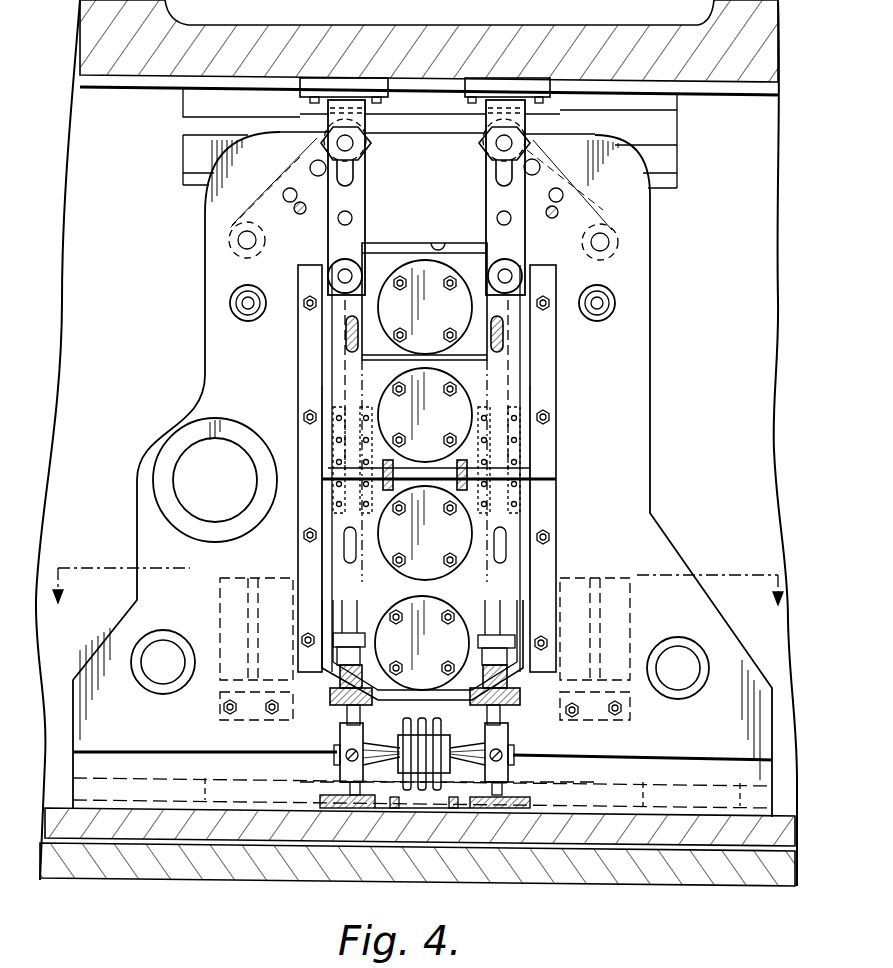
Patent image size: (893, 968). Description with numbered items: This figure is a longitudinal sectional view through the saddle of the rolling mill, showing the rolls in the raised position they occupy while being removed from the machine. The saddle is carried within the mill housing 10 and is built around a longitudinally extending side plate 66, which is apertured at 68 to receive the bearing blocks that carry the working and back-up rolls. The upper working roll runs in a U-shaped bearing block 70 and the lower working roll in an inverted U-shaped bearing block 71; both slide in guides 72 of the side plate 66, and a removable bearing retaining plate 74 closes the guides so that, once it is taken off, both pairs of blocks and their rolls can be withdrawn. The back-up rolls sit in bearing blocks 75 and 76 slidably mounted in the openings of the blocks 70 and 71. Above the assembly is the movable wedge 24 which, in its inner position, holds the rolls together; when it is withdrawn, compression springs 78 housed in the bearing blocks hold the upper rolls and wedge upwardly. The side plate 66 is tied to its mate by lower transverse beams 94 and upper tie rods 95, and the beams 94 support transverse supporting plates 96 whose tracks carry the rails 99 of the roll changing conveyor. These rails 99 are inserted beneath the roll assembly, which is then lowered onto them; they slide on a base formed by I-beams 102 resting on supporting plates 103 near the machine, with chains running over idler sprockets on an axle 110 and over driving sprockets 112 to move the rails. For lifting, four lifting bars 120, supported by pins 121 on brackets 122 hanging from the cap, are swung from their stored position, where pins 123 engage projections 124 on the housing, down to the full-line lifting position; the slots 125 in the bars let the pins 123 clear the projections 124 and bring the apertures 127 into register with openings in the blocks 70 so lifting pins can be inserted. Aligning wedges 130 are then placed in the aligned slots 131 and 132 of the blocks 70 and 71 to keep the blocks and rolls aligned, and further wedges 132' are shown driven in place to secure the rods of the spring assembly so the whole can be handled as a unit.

The mill housing 10 is at (415, 601).
The movable wedge 24 is at (618, 141).
The side plate 66 is at (468, 433).
The aperture 68 is at (445, 243).
The U-shaped bearing block 70 is at (436, 415).
The inverted U-shaped bearing block 71 is at (425, 537).
The guide 72 is at (320, 560).
The removable bearing retaining plate 74 is at (300, 397).
The bearing block 75 is at (421, 301).
The bearing block 76 is at (413, 641).
The compression spring 78 is at (322, 386).
The lower transverse beam 94 is at (240, 632).
The upper tie rod 95 is at (229, 303).
The transverse supporting plate 96 is at (297, 717).
The rail 99 is at (378, 682).
The I-beam 102 is at (340, 712).
The supporting plate 103 is at (325, 795).
The axle 110 is at (460, 746).
The driving sprocket 112 is at (406, 722).
The lifting bar 120 is at (356, 194).
The pin 121 is at (348, 142).
The bracket 122 is at (322, 118).
The pin 123 is at (283, 195).
The projection 124 is at (297, 197).
The slot 125 is at (350, 174).
The aperture 127 is at (330, 270).
The aligning wedge 130 is at (458, 463).
The slot 131 is at (388, 457).
The slot 132 is at (429, 481).
The guide key 132' is at (423, 334).